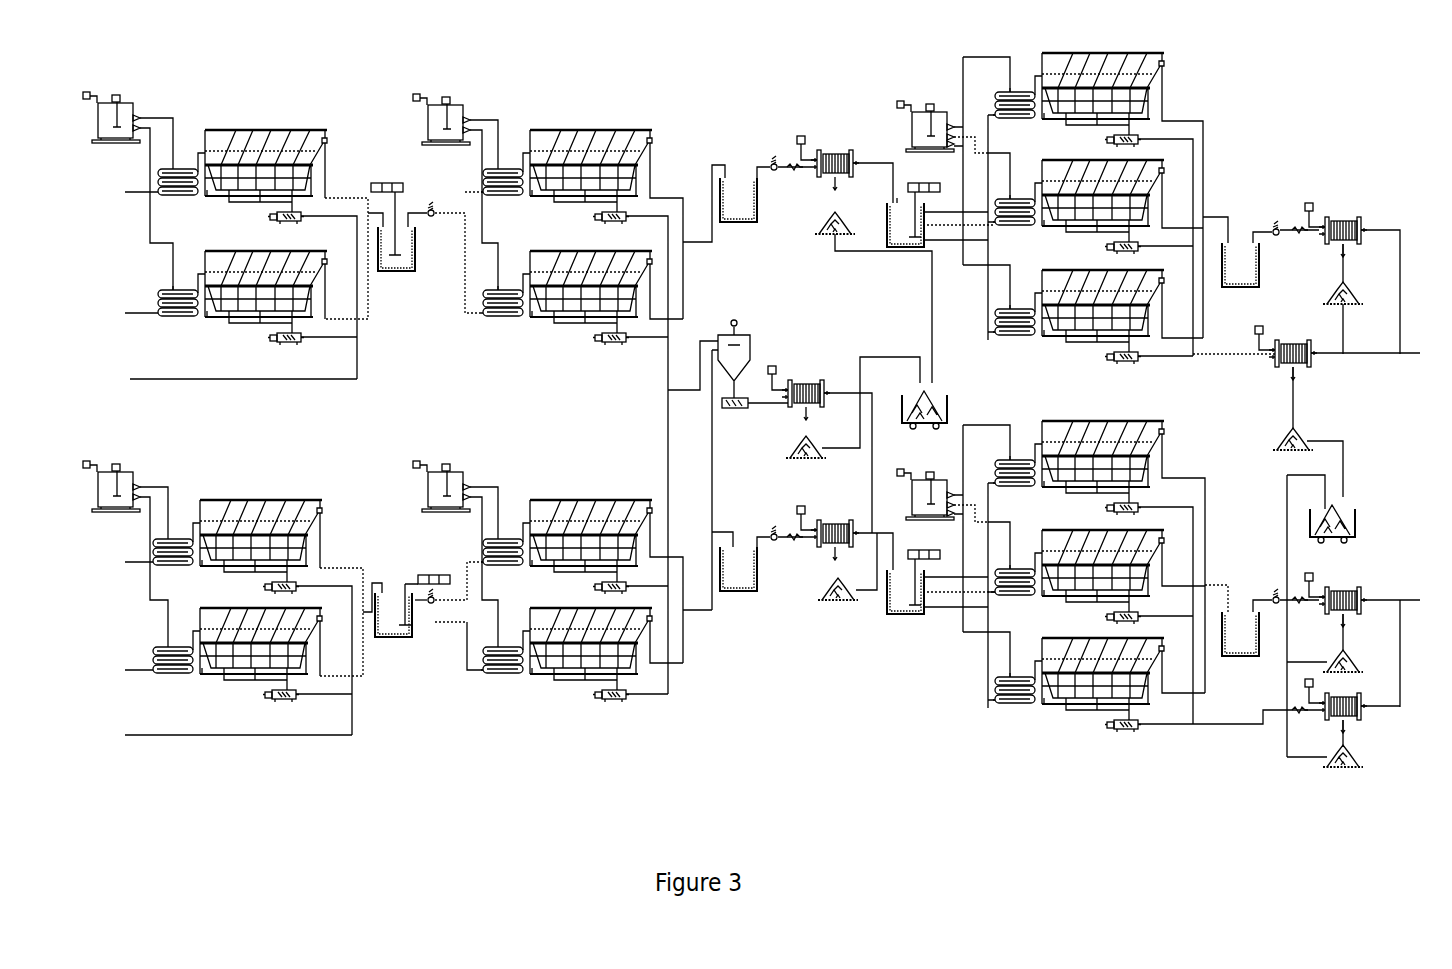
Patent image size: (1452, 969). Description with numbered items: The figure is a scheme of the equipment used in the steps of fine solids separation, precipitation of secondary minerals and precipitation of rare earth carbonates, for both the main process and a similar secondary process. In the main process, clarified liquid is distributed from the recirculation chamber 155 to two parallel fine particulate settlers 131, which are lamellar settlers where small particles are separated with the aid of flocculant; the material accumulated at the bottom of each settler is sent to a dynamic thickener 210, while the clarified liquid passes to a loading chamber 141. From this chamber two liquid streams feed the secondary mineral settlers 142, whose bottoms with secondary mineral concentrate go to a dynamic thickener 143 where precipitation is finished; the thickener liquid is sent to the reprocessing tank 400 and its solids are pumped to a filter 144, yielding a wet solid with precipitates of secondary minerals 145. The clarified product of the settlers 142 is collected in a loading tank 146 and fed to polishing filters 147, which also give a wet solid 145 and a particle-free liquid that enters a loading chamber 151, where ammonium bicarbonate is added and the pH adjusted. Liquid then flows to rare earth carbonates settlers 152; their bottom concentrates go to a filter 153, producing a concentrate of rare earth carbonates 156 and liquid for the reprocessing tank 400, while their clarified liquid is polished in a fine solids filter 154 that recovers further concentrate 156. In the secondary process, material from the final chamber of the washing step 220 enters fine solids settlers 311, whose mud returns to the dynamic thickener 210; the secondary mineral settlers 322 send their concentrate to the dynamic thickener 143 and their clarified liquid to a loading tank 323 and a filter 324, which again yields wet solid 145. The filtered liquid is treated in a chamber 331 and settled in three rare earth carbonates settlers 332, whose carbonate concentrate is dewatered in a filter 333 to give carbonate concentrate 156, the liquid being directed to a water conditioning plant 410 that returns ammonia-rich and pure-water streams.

The fine particulate settlers 131 is at (241, 229).
The loading chamber 141 is at (402, 240).
The secondary mineral settlers 142 is at (566, 229).
The dynamic thickener 143 is at (753, 358).
The filter 144 is at (799, 389).
The wet solid with precipitates of secondary minerals 145 is at (810, 405).
The loading tank 146 is at (738, 212).
The polishing filters 147 is at (828, 161).
The loading chamber 151 is at (913, 225).
The rare earth carbonates settlers 152 is at (1092, 208).
The filter 153 is at (1286, 349).
The fine solids filter 154 is at (1336, 223).
The recirculation chamber 155 is at (124, 257).
The concentrate of rare earth carbonates 156 is at (1317, 516).
The dynamic thickener 210 is at (225, 557).
The washing step 220 is at (123, 618).
The fine solids settlers 311 is at (236, 589).
The secondary mineral settlers of the secondary process 322 is at (566, 591).
The loading tank 323 is at (738, 553).
The filter 324 is at (828, 530).
The chamber 331 is at (913, 595).
The rare earth carbonates settlers 332 is at (1078, 566).
The filter 333 is at (1336, 703).
The reprocessing tank 400 is at (1380, 355).
The water conditioning plant 410 is at (1406, 601).